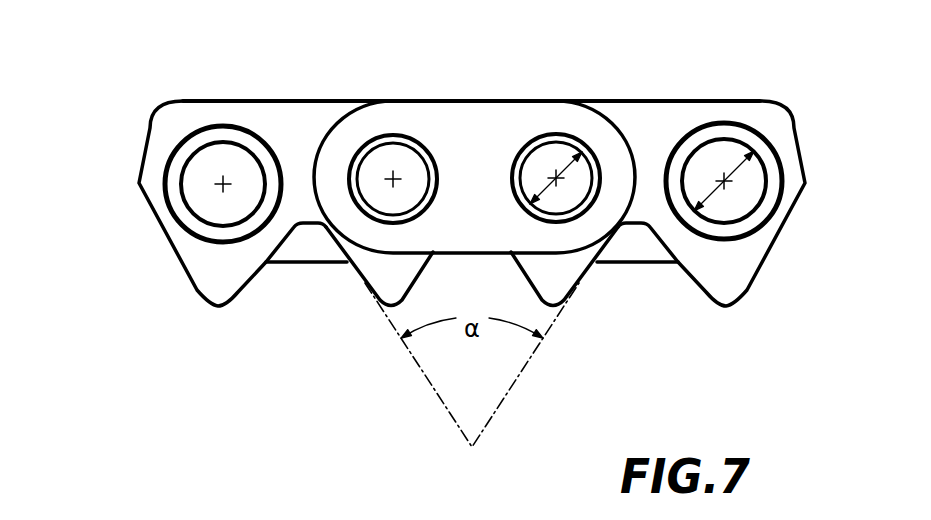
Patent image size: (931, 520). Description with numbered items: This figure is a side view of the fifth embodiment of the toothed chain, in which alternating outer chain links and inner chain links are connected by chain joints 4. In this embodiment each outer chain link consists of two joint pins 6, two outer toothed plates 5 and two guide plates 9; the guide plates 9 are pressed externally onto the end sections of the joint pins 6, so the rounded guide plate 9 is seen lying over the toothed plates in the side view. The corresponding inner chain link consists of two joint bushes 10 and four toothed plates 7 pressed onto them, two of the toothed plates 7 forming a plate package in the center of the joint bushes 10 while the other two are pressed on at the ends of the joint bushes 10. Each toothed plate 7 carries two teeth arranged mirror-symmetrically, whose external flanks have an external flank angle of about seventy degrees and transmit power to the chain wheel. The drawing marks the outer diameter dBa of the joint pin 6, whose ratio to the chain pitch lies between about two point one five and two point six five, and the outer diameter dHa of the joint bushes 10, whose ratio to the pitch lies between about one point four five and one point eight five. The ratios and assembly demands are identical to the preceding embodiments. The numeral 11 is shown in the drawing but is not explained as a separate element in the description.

The chain joint 4 is at (362, 132).
The outer plate 5 is at (385, 273).
The joint pin 6 is at (407, 158).
The toothed plate 7 is at (218, 277).
The guide plate 9 is at (457, 140).
The joint bush 10 is at (177, 160).
The roller 11 is at (567, 232).
The outer diameter of the joint pin dBa is at (540, 183).
The outer diameter of the joint bush dHa is at (712, 182).